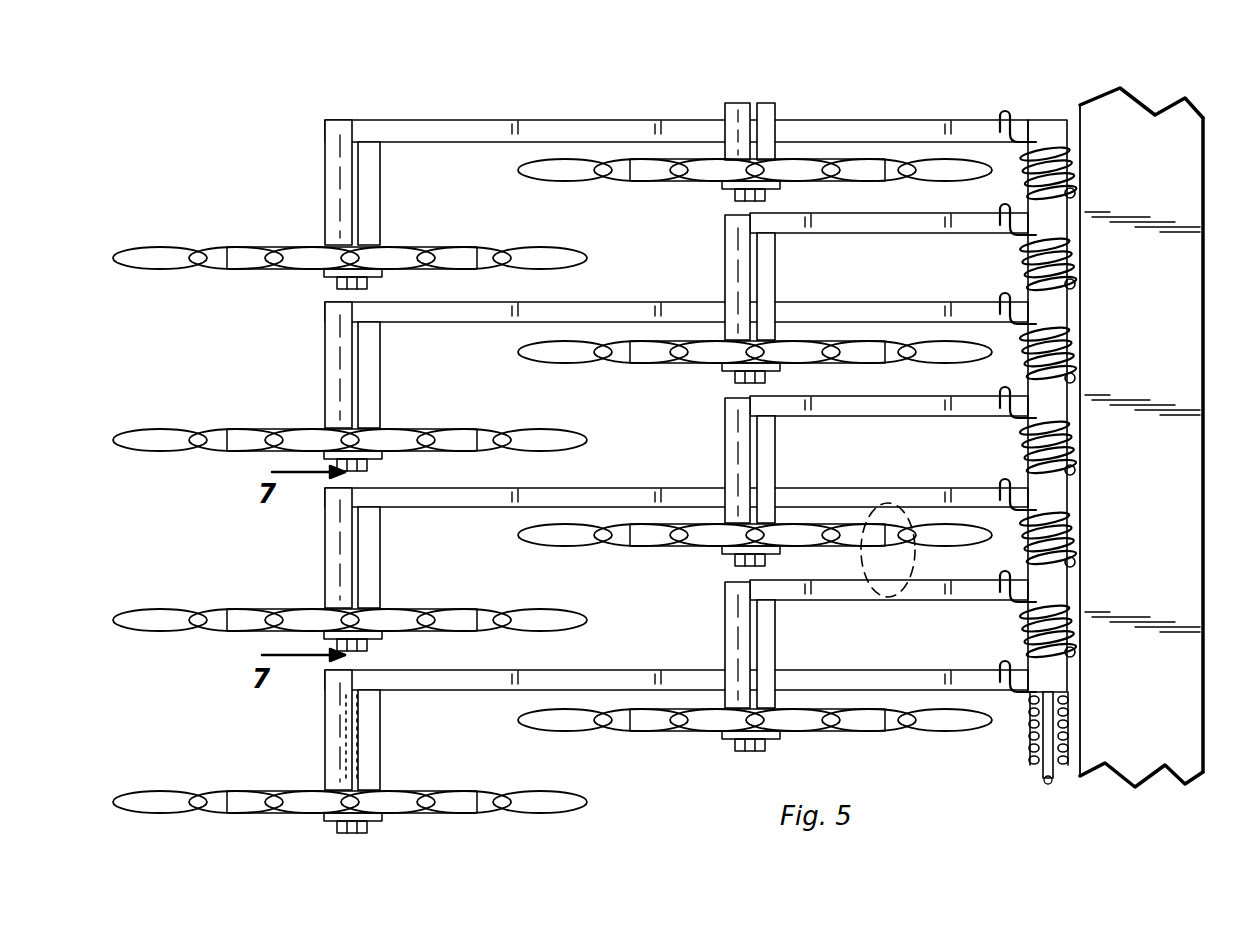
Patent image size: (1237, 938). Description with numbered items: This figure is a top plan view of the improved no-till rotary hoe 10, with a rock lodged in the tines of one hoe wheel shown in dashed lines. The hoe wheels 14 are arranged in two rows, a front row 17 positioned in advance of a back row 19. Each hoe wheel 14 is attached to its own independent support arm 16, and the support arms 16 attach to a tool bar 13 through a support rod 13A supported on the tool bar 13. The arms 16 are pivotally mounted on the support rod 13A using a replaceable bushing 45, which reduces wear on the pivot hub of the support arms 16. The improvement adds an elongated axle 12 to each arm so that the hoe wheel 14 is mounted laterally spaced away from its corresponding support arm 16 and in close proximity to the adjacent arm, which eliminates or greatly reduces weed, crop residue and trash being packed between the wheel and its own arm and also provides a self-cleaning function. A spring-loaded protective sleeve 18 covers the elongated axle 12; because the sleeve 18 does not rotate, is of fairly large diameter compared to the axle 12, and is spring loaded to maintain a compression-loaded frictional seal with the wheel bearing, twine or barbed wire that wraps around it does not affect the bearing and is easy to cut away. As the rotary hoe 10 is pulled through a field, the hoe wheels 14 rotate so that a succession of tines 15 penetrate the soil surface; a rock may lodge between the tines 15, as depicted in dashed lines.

The no-till rotary hoe improvement 10 is at (312, 752).
The elongated axle 12 is at (372, 752).
The tool bar 13 is at (1158, 584).
The support rod 13A is at (1050, 784).
The hoe wheel 14 is at (406, 246).
The tines 15 is at (440, 438).
The support arm 16 is at (504, 143).
The front row 17 is at (792, 96).
The spring-loaded protective sleeve 18 is at (325, 172).
The back row 19 is at (398, 104).
The replaceable bushing 45 is at (1032, 770).